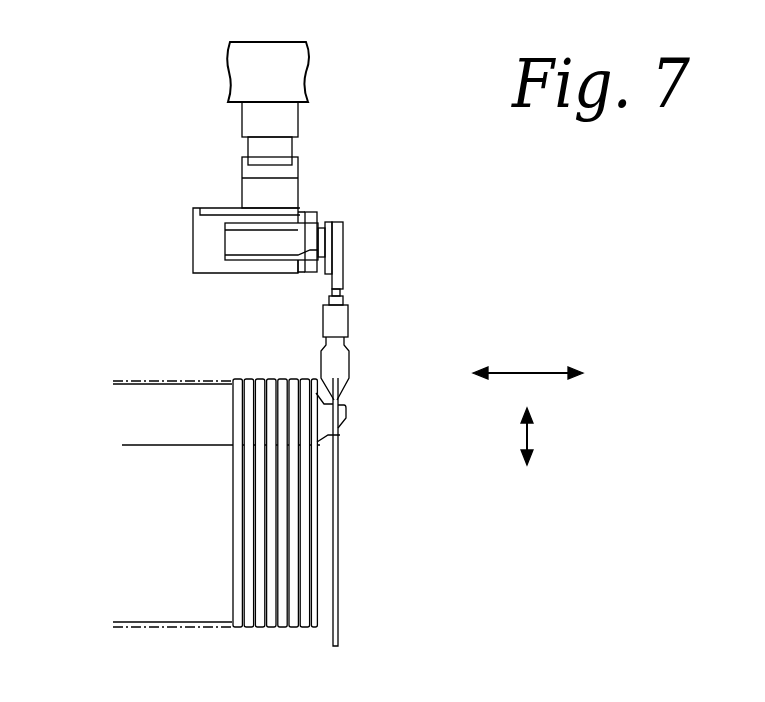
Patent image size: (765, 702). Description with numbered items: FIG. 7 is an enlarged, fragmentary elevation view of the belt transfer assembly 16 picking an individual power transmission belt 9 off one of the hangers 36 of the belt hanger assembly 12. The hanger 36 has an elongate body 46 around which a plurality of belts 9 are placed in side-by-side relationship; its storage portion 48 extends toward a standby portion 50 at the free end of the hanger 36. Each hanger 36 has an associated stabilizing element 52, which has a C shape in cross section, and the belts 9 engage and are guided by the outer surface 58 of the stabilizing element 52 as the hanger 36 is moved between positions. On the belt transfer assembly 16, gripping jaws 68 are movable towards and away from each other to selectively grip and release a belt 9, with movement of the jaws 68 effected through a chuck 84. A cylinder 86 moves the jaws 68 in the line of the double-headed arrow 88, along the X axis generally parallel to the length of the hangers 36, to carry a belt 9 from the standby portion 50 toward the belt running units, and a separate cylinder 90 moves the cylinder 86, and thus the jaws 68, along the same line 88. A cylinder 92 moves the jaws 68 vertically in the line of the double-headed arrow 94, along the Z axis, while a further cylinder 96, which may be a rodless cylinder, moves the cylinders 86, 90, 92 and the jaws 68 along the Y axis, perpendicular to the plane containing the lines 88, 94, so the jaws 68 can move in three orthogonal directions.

The power transmission belt 9 is at (318, 378).
The belt hanger assembly 12 is at (147, 362).
The belt transfer assembly 16 is at (333, 201).
The hanger 36 is at (346, 412).
The elongate body 46 is at (168, 430).
The storage portion 48 is at (208, 381).
The standby portion 50 is at (320, 435).
The stabilizing element 52 is at (140, 628).
The outer surface 58 is at (188, 628).
The gripping jaws 68 is at (325, 358).
The chuck 84 is at (336, 318).
The cylinder 86 is at (247, 250).
The double-headed arrow 88 is at (520, 372).
The cylinder 90 is at (203, 242).
The cylinder 92 is at (336, 258).
The double-headed arrow 94 is at (527, 434).
The cylinder 96 is at (262, 150).